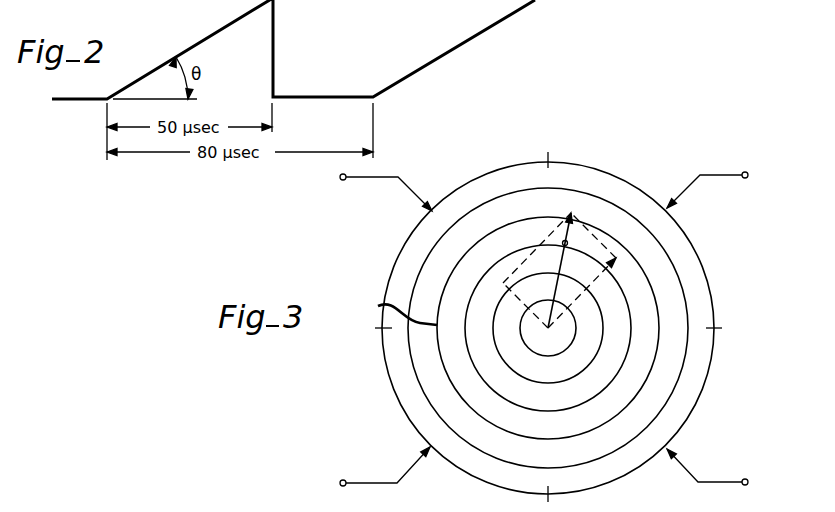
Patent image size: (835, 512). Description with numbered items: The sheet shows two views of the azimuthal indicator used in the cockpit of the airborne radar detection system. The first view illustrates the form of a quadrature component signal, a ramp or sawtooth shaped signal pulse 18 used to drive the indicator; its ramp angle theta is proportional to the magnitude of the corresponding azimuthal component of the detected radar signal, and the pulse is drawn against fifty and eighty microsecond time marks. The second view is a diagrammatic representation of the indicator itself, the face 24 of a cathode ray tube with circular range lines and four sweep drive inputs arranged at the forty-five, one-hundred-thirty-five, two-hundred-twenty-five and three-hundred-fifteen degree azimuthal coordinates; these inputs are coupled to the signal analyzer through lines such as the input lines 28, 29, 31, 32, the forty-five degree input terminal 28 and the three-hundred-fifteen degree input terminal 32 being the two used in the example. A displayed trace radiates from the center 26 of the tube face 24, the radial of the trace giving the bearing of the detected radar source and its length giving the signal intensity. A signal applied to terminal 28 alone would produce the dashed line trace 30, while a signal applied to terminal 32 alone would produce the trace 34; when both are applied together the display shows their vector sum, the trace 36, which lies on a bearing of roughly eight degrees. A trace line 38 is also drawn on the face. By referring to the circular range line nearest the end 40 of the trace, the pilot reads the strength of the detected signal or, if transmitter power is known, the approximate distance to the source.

In FIG. 2, the sawtooth shaped signal pulse 18 is at (197, 44).
In FIG. 3, the face of cathode ray tube 24 is at (577, 162).
In FIG. 3, the center of tube face 26 is at (548, 329).
In FIG. 3, the 45° input terminal 28 is at (708, 176).
In FIG. 3, the input terminal line 29 is at (690, 470).
In FIG. 3, the dashed line trace 30 is at (575, 302).
In FIG. 3, the input terminal line 31 is at (404, 474).
In FIG. 3, the 315° input terminal 32 is at (391, 178).
In FIG. 3, the trace 34 is at (519, 300).
In FIG. 3, the vector sum trace 36 is at (562, 242).
In FIG. 3, the trace line 38 is at (393, 314).
In FIG. 3, the end of trace 40 is at (576, 212).